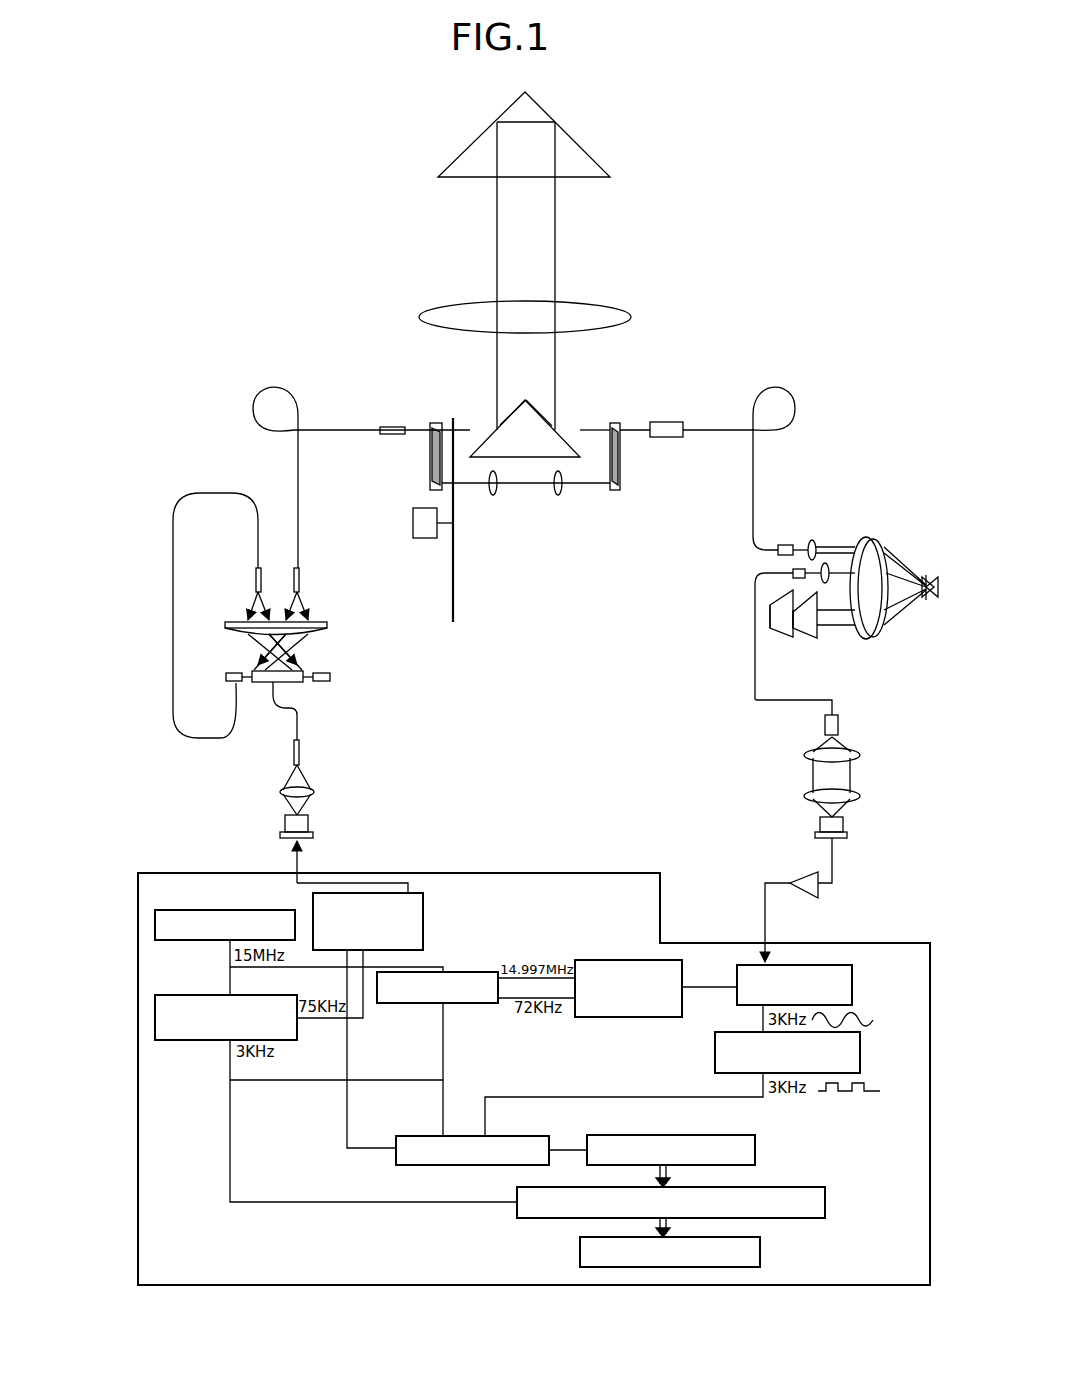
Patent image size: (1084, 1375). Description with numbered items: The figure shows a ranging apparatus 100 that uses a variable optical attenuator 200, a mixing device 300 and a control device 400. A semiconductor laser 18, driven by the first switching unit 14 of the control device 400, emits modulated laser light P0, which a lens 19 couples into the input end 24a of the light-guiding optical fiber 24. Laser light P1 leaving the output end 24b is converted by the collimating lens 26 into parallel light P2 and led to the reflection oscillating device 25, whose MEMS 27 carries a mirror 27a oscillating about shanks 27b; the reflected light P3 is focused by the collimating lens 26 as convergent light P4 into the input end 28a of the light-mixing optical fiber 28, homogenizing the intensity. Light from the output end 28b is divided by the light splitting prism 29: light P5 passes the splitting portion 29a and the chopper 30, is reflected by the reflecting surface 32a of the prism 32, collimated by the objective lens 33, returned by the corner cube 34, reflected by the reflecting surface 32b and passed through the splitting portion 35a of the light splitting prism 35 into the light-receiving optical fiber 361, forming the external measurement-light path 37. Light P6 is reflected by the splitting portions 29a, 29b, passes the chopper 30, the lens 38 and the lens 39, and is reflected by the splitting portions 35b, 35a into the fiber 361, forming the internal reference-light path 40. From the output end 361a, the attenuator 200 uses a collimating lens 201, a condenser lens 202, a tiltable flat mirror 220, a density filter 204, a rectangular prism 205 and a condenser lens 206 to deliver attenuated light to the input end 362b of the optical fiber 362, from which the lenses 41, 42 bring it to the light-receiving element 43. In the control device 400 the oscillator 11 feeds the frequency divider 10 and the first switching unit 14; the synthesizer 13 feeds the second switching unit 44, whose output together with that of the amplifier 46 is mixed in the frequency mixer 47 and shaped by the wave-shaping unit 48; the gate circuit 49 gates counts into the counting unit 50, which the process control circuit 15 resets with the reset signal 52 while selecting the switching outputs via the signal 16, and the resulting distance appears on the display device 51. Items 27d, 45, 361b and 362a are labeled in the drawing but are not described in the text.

The ranging apparatus 100 is at (784, 186).
The variable optical attenuator 200 is at (860, 468).
The mixing device 300 is at (230, 430).
The control device 400 is at (601, 868).
The frequency divider 10 is at (155, 1020).
The oscillator 11 is at (155, 927).
The synthesizer 13 is at (470, 1004).
The first switching unit 14 is at (425, 897).
The process control circuit 15 is at (517, 1213).
The signal 16 is at (427, 923).
The semiconductor laser 18 is at (280, 835).
The lens 19 is at (315, 792).
The light-guiding optical fiber 24 is at (172, 617).
The input end of optical fiber 24 24a is at (300, 752).
The output end of optical fiber 24 24b is at (255, 580).
The reflection oscillating device 25 is at (200, 665).
The collimating lens 26 is at (327, 632).
The MEMS 27 is at (340, 697).
The mirror 27a is at (281, 683).
The shanks 27b is at (305, 683).
The modulator port 27d is at (335, 677).
The light-mixing optical fiber 28 is at (330, 428).
The input end of optical fiber 28 28a is at (300, 580).
The output end of optical fiber 28 28b is at (393, 426).
The light splitting prism 29 is at (436, 418).
The splitting portion 29a is at (430, 437).
The splitting portion 29b is at (430, 483).
The chopper 30 is at (453, 608).
The prism 32 is at (525, 397).
The reflecting surface 32a is at (497, 370).
The reflecting surface 32b is at (545, 407).
The objective lens 33 is at (630, 306).
The corner cube 34 is at (585, 141).
The light splitting prism 35 is at (619, 418).
The splitting portion 35a is at (622, 436).
The splitting portion 35b is at (622, 483).
The external measurement-light path 37 is at (560, 226).
The lens 38 is at (493, 497).
The lens 39 is at (559, 497).
The internal reference-light path 40 is at (523, 514).
The lens 41 is at (860, 752).
The lens 42 is at (860, 795).
The light-receiving element 43 is at (845, 825).
The second switching unit 44 is at (585, 959).
The detection signal 45 is at (832, 858).
The amplifier 46 is at (818, 893).
The frequency mixer 47 is at (852, 978).
The wave-shaping unit 48 is at (860, 1043).
The gate circuit 49 is at (396, 1162).
The counting unit 50 is at (755, 1140).
The display device 51 is at (760, 1252).
The reset signal 52 is at (685, 1165).
The collimating lens 201 is at (812, 539).
The condenser lens 202 is at (884, 540).
The density filter 204 is at (812, 636).
The rectangular prism 205 is at (782, 638).
The condenser lens 206 is at (830, 562).
The flat mirror 220 is at (928, 600).
The light-receiving optical fiber 361 is at (745, 428).
The output end of optical fiber 361 361a is at (785, 544).
The fiber connector 361b is at (668, 421).
The optical fiber 362 is at (755, 660).
The fiber end 362a is at (820, 723).
The input end of optical fiber 362 362b is at (793, 572).
The laser light P0 is at (300, 808).
The laser light P1 is at (250, 605).
The parallel light P2 is at (262, 650).
The reflected light P3 is at (310, 650).
The convergent light P4 is at (305, 606).
The light P5 is at (473, 427).
The light P6 is at (430, 462).